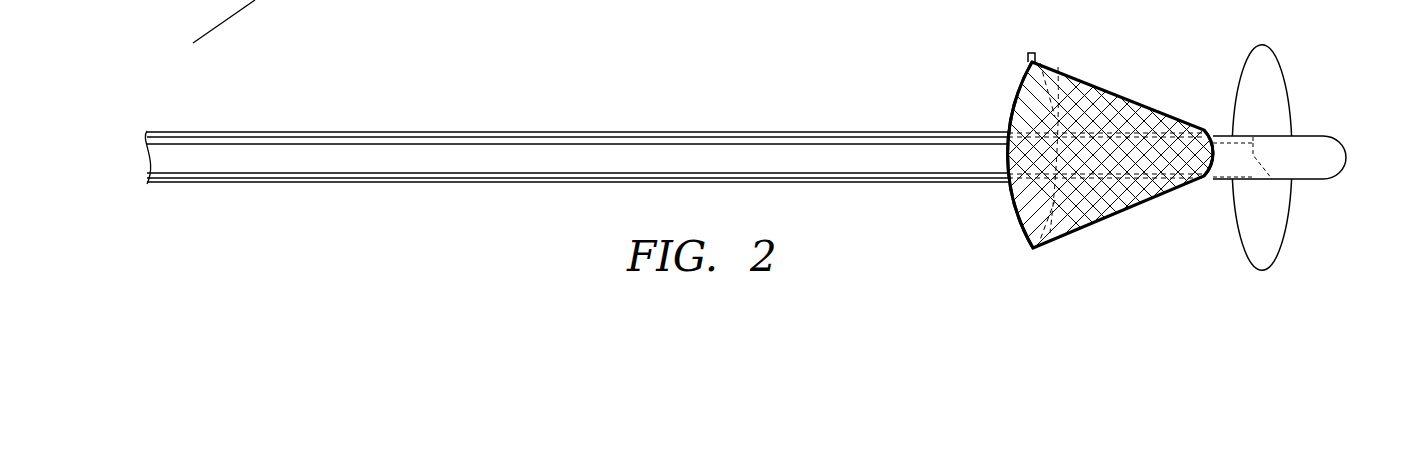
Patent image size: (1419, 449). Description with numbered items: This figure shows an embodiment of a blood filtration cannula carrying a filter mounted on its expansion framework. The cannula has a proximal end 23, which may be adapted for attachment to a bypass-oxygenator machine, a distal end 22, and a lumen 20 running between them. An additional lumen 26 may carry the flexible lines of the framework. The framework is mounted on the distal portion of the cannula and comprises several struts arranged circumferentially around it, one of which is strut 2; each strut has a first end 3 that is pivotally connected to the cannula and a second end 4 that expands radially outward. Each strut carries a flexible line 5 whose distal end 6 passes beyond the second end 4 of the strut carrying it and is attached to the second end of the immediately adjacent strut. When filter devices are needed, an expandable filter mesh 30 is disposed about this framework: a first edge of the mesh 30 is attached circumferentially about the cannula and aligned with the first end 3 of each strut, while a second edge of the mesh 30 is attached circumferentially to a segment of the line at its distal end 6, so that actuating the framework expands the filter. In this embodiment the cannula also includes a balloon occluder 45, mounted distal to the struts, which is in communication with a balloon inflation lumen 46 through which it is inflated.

The strut 2 is at (1123, 99).
The first end 3 is at (1205, 131).
The second end 4 is at (1033, 55).
The flexible line 5 is at (493, 133).
The distal end 6 is at (1012, 218).
The lumen 20 is at (433, 157).
The distal end 22 is at (1347, 153).
The proximal end 23 is at (135, 155).
The additional lumen 26 is at (375, 135).
The mesh 30 is at (1088, 197).
The balloon occluder 45 is at (1252, 232).
The balloon inflation lumen 46 is at (555, 140).